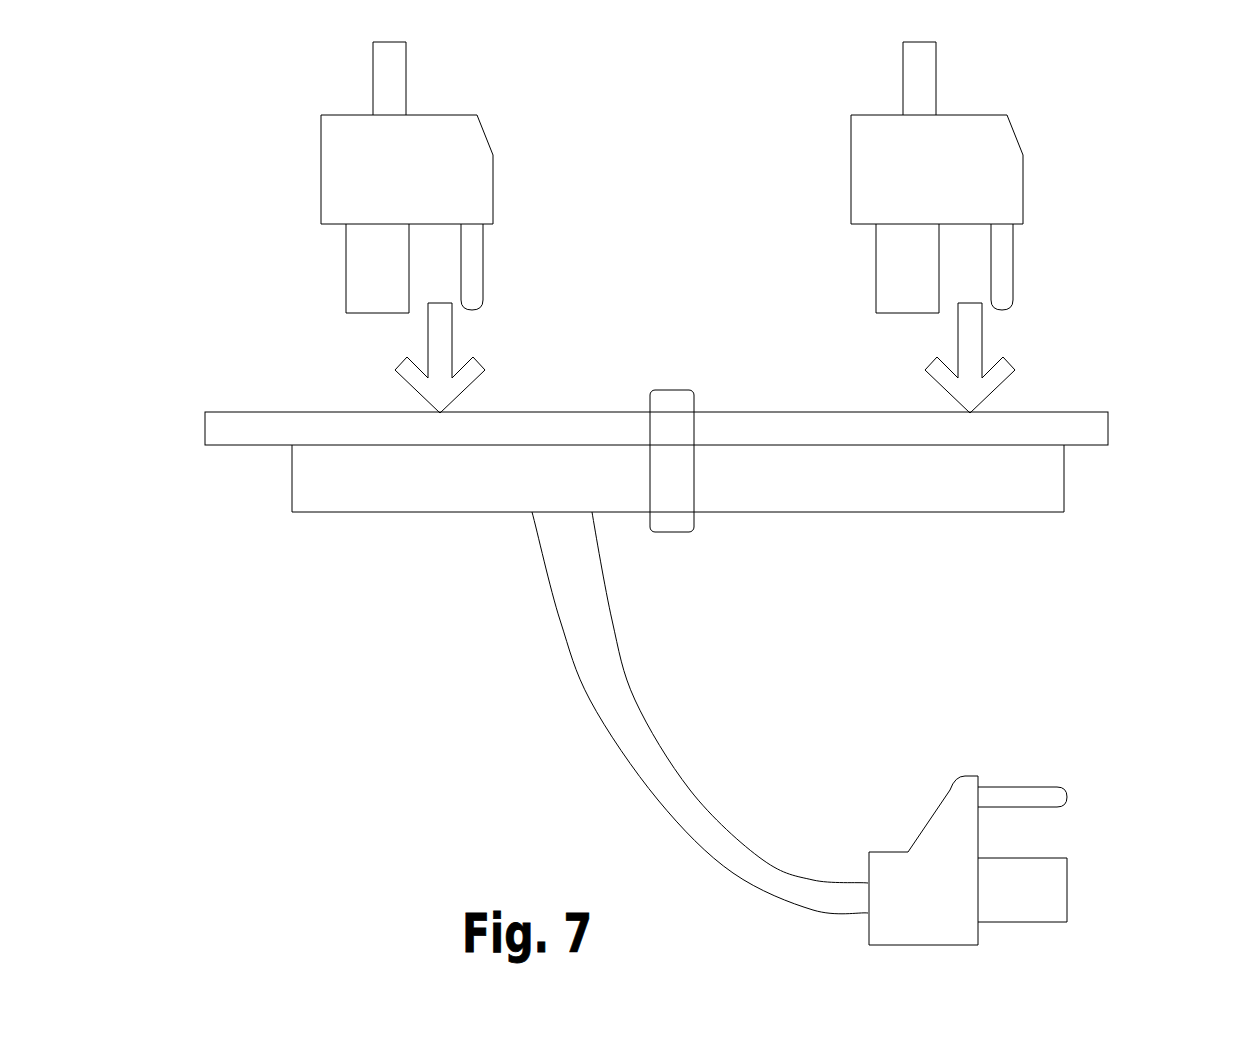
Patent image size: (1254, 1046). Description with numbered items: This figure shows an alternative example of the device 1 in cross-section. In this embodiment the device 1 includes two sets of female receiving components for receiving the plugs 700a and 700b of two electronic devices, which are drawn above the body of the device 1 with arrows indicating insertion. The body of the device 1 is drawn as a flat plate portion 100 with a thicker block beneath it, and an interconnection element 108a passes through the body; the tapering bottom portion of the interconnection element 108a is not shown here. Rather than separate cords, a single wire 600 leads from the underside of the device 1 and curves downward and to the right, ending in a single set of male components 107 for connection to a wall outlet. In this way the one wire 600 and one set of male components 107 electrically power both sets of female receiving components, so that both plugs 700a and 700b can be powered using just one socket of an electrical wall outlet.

The device 1 is at (669, 616).
The socket / receptacle body 100 is at (1093, 428).
The male components 107 is at (950, 780).
The interconnection element 108a is at (673, 387).
The wire 600 is at (582, 613).
The plug 700a is at (367, 143).
The plug 700b is at (895, 143).